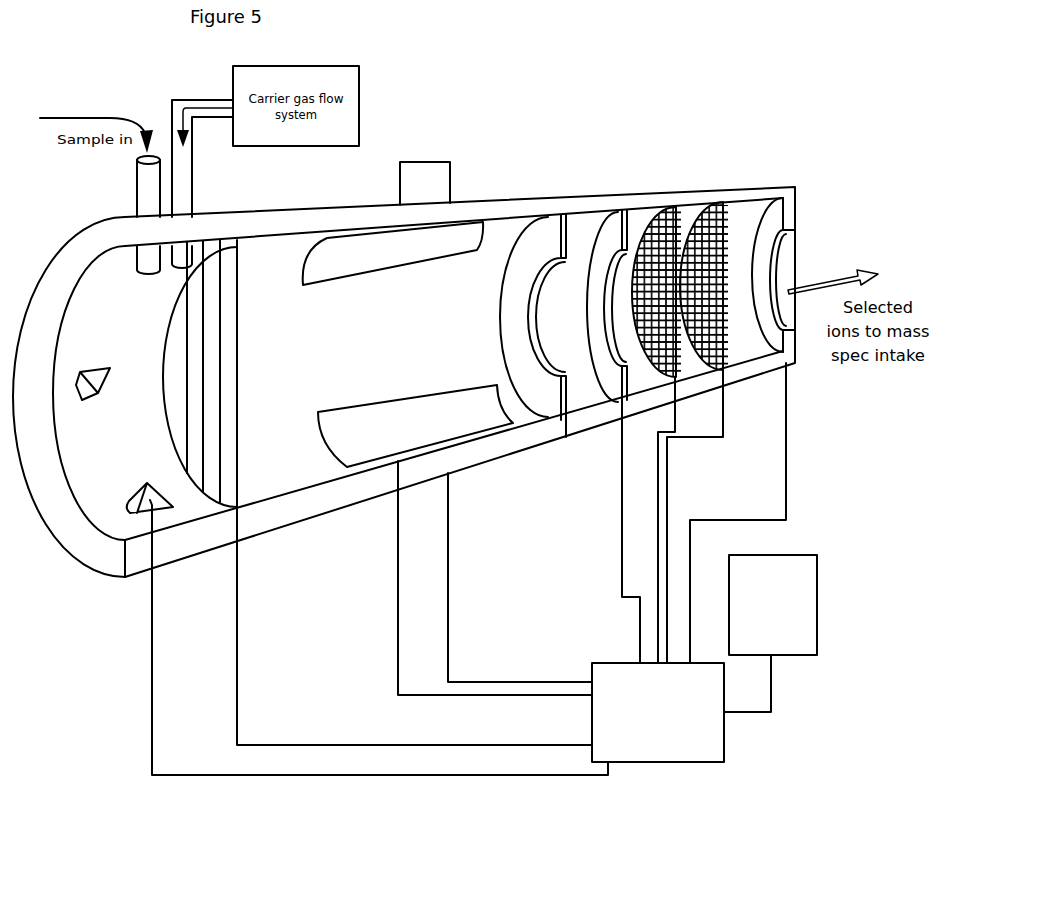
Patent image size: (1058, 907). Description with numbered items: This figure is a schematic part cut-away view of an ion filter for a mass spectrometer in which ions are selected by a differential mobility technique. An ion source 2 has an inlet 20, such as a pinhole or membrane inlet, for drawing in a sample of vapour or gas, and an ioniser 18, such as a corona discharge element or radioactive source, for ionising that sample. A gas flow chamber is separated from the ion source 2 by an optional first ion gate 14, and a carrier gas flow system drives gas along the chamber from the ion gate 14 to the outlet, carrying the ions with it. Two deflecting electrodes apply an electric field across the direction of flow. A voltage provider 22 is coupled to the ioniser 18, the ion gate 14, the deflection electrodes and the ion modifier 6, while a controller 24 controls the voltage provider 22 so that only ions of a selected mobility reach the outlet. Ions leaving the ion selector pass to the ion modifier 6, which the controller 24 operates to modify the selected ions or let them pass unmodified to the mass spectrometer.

The ion source 2 is at (72, 290).
The inlet 20 is at (137, 194).
The ioniser 18 is at (160, 508).
The ion gate 14 is at (230, 485).
The ion modifier 6 is at (725, 181).
The voltage provider 22 is at (658, 712).
The controller 24 is at (770, 633).